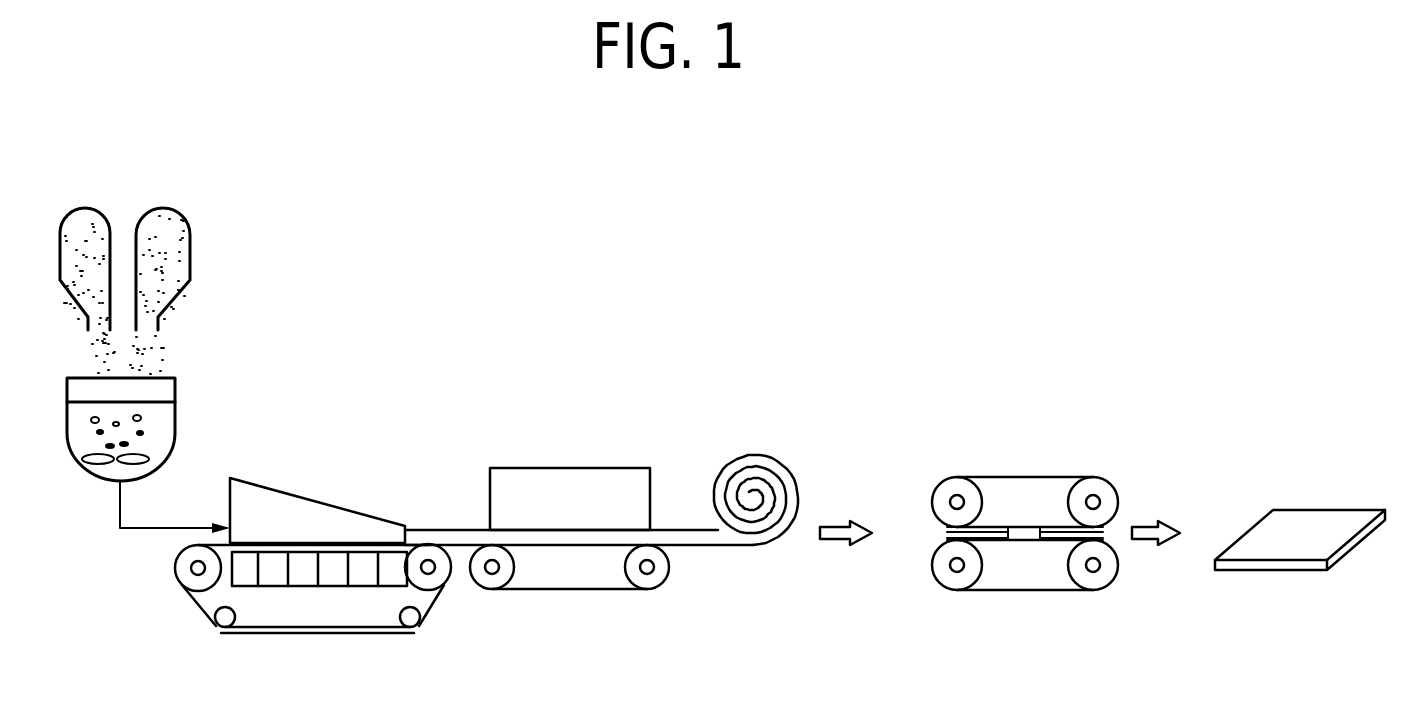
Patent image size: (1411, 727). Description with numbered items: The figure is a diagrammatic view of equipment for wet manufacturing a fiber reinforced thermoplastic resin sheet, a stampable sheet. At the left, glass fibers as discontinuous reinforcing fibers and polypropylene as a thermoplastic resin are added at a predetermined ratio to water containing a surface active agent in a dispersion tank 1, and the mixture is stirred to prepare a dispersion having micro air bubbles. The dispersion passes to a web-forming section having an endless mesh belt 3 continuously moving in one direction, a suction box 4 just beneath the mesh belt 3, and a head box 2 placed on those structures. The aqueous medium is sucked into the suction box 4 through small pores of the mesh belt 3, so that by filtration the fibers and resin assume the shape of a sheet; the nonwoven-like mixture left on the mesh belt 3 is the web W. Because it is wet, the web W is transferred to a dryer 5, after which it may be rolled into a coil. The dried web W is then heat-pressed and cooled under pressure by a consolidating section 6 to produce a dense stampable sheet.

The dispersion tank 1 is at (177, 415).
The head box 2 is at (308, 513).
The endless mesh belt 3 is at (263, 633).
The suction box 4 is at (340, 575).
The web W is at (447, 527).
The dryer 5 is at (587, 477).
The consolidating section 6 is at (1017, 493).